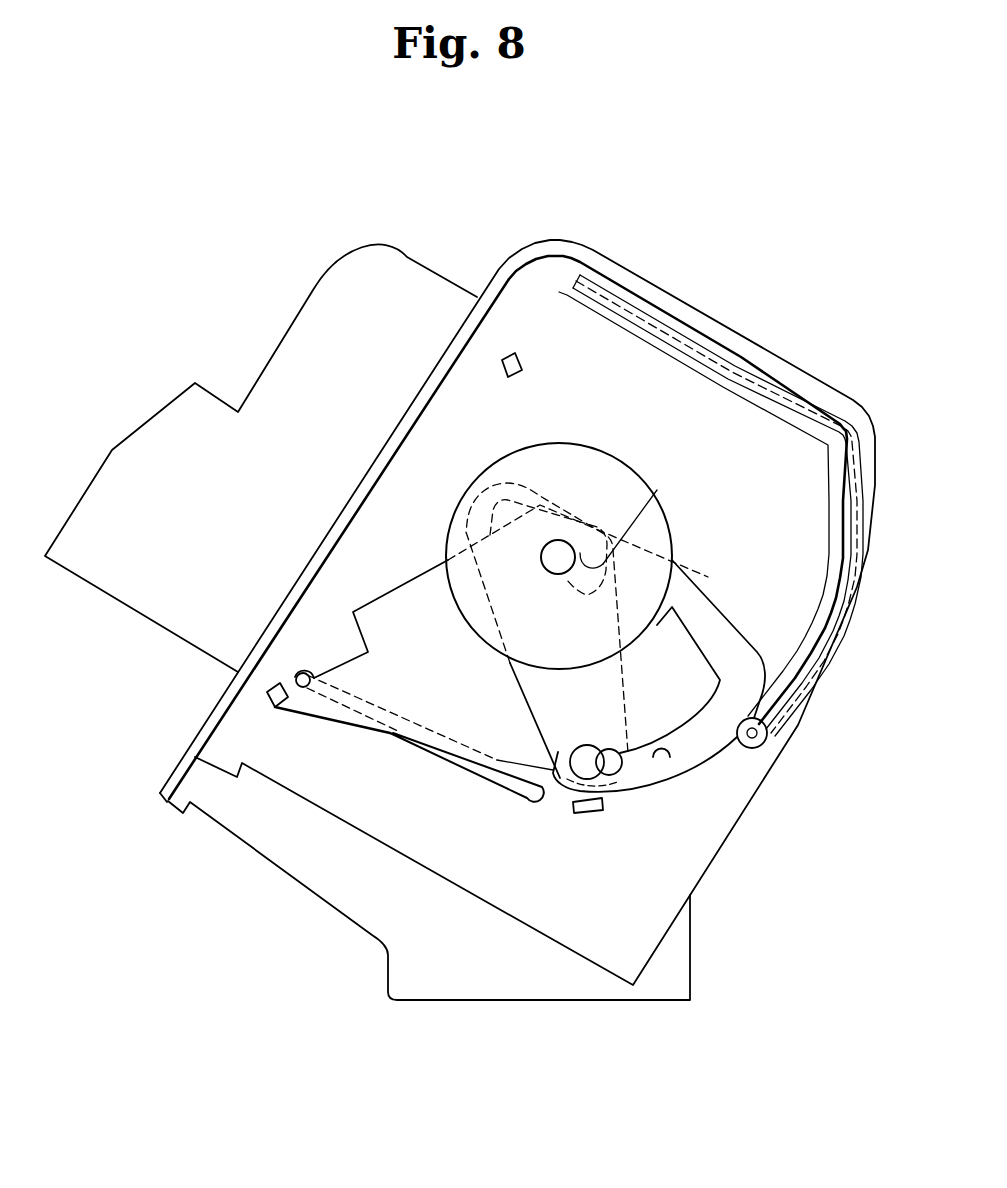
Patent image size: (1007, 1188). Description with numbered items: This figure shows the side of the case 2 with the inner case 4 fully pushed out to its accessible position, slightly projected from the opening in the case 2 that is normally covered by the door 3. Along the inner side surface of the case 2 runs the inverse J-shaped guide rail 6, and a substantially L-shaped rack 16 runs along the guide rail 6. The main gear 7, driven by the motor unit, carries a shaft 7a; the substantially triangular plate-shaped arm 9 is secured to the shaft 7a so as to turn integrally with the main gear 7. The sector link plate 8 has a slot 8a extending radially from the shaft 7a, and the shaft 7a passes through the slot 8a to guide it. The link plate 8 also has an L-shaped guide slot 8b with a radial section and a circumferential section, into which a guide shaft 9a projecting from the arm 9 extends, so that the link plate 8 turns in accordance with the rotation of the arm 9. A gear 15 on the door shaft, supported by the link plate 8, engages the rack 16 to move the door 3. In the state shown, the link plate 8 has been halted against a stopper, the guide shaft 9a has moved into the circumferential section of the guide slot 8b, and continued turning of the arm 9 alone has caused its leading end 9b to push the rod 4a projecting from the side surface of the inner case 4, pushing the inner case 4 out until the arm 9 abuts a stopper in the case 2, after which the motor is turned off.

The case 2 is at (565, 242).
The door 3 is at (682, 330).
The inner case 4 is at (405, 258).
The rod 4a is at (303, 673).
The guide rail 6 is at (313, 558).
The main gear 7 is at (555, 446).
The shaft 7a is at (552, 565).
The sector link plate 8 is at (568, 792).
The slot 8a is at (697, 464).
The L-shaped guide slot 8b is at (668, 749).
The arm 9 is at (446, 742).
The guide shaft 9a is at (606, 750).
The leading end 9b is at (293, 688).
The gear 15 is at (762, 746).
The rack 16 is at (816, 583).